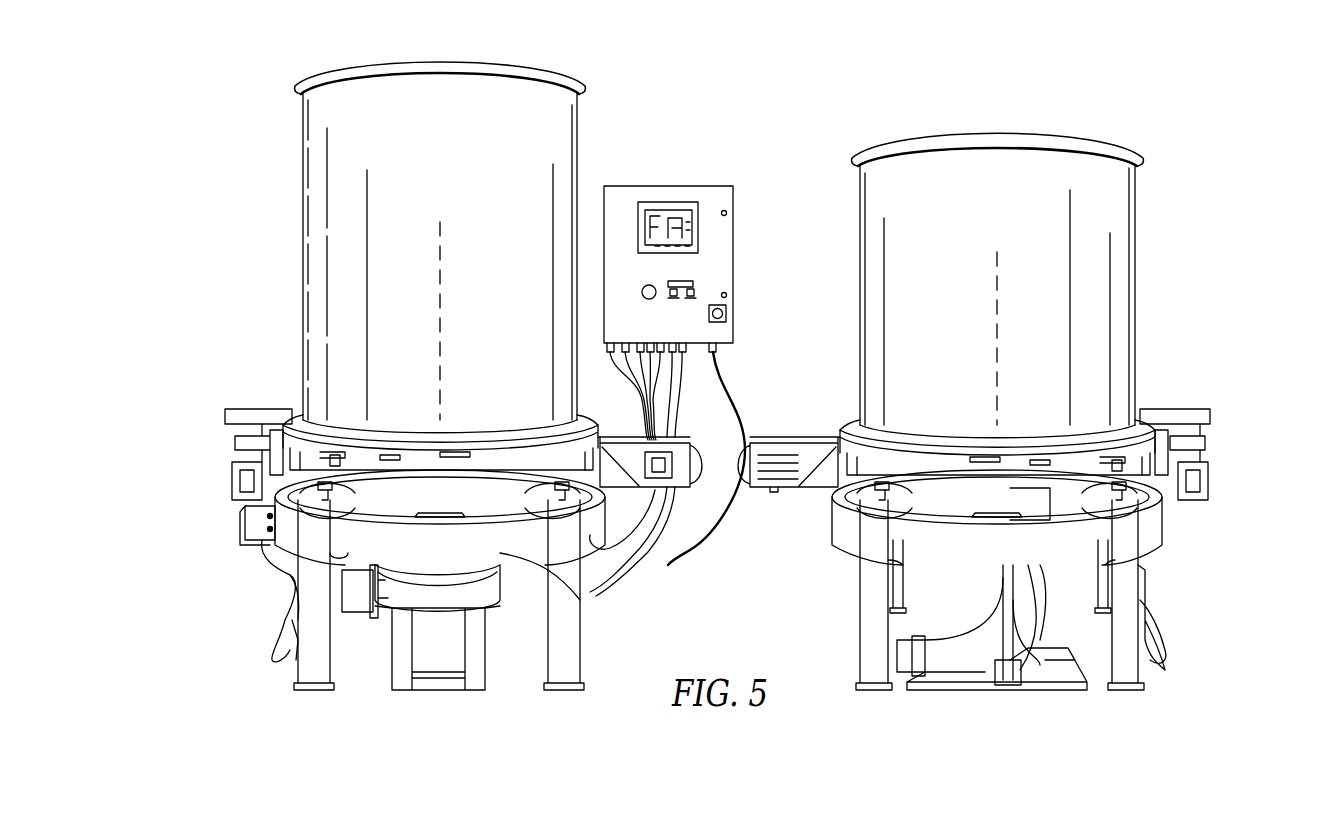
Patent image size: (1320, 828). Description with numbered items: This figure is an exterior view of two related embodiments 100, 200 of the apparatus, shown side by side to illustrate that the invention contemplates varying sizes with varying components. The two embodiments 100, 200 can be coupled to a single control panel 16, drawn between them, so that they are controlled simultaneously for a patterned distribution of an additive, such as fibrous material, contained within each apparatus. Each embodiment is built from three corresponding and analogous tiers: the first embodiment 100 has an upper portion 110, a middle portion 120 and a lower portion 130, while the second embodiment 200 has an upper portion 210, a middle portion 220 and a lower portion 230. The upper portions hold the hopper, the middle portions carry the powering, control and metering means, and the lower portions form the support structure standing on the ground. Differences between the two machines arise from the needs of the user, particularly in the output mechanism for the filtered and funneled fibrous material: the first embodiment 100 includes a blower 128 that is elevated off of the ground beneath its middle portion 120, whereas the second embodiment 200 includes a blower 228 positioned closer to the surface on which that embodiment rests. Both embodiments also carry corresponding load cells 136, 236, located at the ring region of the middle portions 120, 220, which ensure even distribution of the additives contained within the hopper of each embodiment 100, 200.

The embodiment 100 is at (552, 42).
The upper portion 110 is at (227, 85).
The middle portion 120 is at (227, 404).
The blower 128 is at (425, 588).
The lower portion 130 is at (228, 494).
The load cells 136 is at (548, 490).
The control panel 16 is at (668, 190).
The embodiment 200 is at (888, 96).
The upper portion 210 is at (1212, 148).
The middle portion 220 is at (1215, 408).
The blower 228 is at (955, 658).
The lower portion 230 is at (1215, 497).
The load cells 236 is at (843, 515).